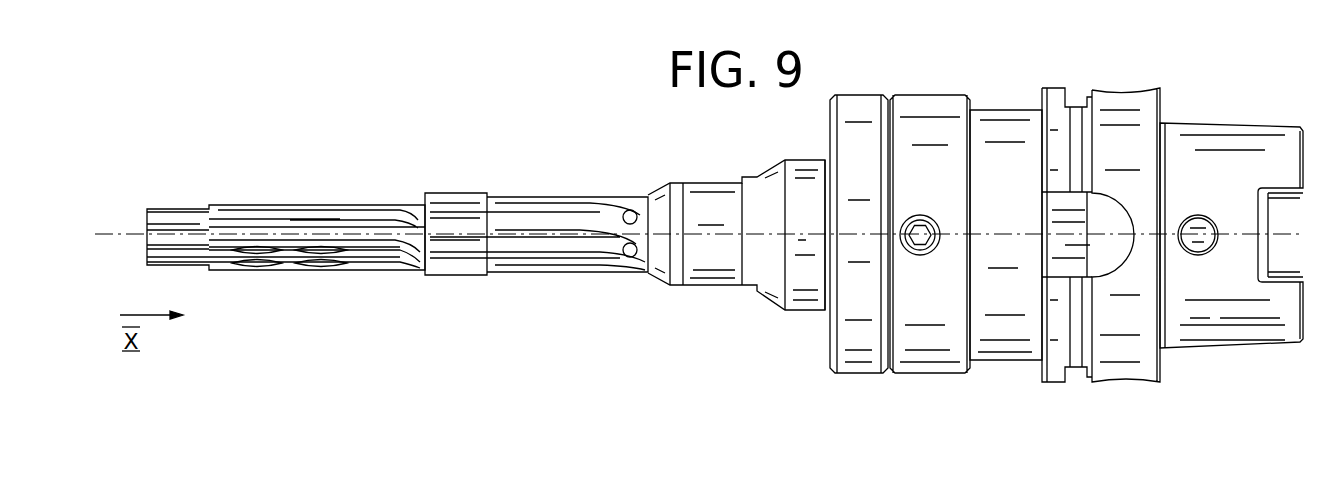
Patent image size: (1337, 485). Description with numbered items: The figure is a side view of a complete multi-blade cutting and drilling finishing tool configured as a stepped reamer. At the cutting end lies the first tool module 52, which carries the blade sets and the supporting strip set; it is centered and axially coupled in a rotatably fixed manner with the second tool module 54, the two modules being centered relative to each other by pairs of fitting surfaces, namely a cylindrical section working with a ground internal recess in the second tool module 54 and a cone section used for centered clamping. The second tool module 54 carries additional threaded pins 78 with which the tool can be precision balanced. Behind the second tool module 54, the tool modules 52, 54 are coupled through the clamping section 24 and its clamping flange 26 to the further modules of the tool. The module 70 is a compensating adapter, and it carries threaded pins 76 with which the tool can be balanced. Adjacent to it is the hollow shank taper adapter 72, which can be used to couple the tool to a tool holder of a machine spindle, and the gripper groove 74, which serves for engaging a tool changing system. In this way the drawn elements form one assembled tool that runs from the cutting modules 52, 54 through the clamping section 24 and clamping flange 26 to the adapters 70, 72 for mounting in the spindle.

The clamping section 24 is at (975, 229).
The clamping flange 26 is at (862, 357).
The first tool module 52 is at (395, 262).
The second tool module 54 is at (724, 274).
The compensating adapter 70 is at (1003, 340).
The hollow shank taper adapter 72 is at (1122, 362).
The gripper groove 74 is at (1068, 90).
The threaded pins 76 is at (920, 92).
The additional threaded pins 78 is at (632, 207).